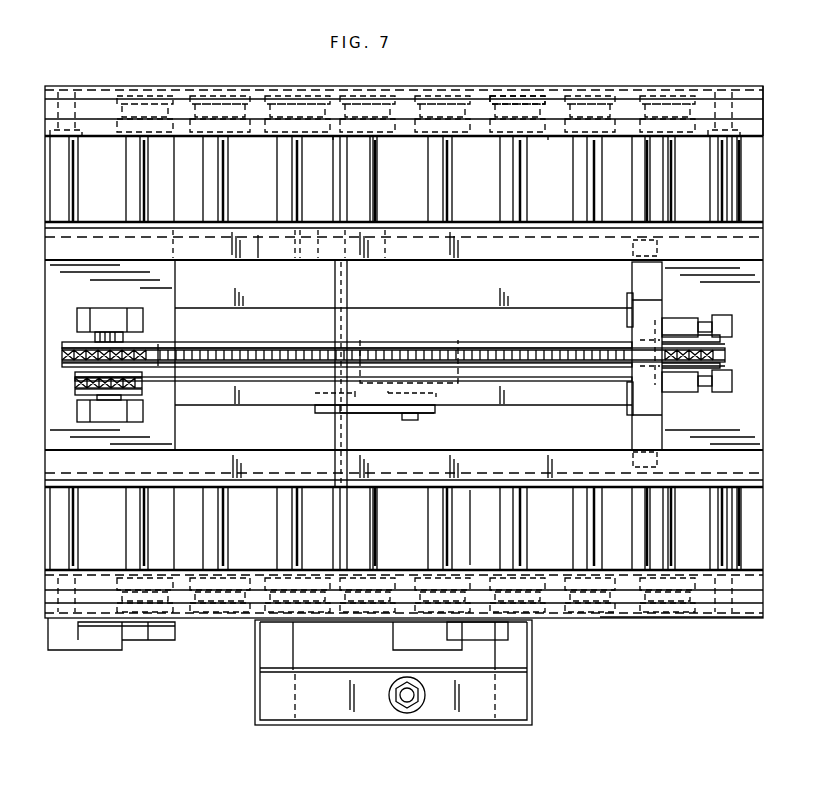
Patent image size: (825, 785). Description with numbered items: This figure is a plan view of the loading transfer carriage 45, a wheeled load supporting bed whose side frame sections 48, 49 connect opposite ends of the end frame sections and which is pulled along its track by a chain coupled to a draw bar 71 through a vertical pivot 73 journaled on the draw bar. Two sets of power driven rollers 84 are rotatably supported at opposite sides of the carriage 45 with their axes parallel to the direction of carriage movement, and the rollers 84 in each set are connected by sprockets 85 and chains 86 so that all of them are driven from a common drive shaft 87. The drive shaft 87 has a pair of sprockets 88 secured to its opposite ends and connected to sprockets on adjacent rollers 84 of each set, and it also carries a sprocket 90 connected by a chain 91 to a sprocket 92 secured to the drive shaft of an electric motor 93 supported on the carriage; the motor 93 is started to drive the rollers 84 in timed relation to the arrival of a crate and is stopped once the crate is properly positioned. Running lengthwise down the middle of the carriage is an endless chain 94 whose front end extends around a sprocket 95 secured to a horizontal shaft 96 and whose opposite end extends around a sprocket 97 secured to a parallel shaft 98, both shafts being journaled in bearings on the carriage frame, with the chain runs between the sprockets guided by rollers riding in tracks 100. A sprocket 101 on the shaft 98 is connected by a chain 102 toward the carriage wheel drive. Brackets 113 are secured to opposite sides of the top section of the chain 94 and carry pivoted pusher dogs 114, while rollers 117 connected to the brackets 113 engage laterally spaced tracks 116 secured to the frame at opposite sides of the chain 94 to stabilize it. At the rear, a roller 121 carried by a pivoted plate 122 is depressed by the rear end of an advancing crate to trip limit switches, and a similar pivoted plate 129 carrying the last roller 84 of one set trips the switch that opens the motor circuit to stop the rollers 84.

The loading carriage 45 is at (664, 625).
The side frame section 48 is at (762, 619).
The side frame section 49 is at (763, 104).
The draw bar 71 is at (436, 710).
The vertical pivot 73 is at (405, 699).
The power driven rollers 84 is at (582, 175).
The sprockets 85 is at (545, 90).
The chains 86 is at (548, 138).
The drive shaft 87 is at (347, 301).
The sprockets 88 is at (331, 139).
The sprocket 90 is at (327, 412).
The chain 91 is at (377, 414).
The sprocket 92 is at (432, 411).
The electric motor 93 is at (462, 322).
The endless chain 94 is at (725, 357).
The sprocket 95 is at (725, 348).
The shaft 96 is at (683, 338).
The sprocket 97 is at (70, 368).
The shaft 98 is at (107, 332).
The tracks 100 is at (400, 349).
The sprocket 101 is at (143, 396).
The chain 102 is at (143, 384).
The brackets 113 is at (655, 284).
The pusher dogs 114 is at (627, 318).
The tracks 116 is at (262, 252).
The rollers 117 is at (658, 250).
The roller 121 is at (470, 516).
The plate 122 is at (508, 633).
The pivoted plate 129 is at (165, 641).